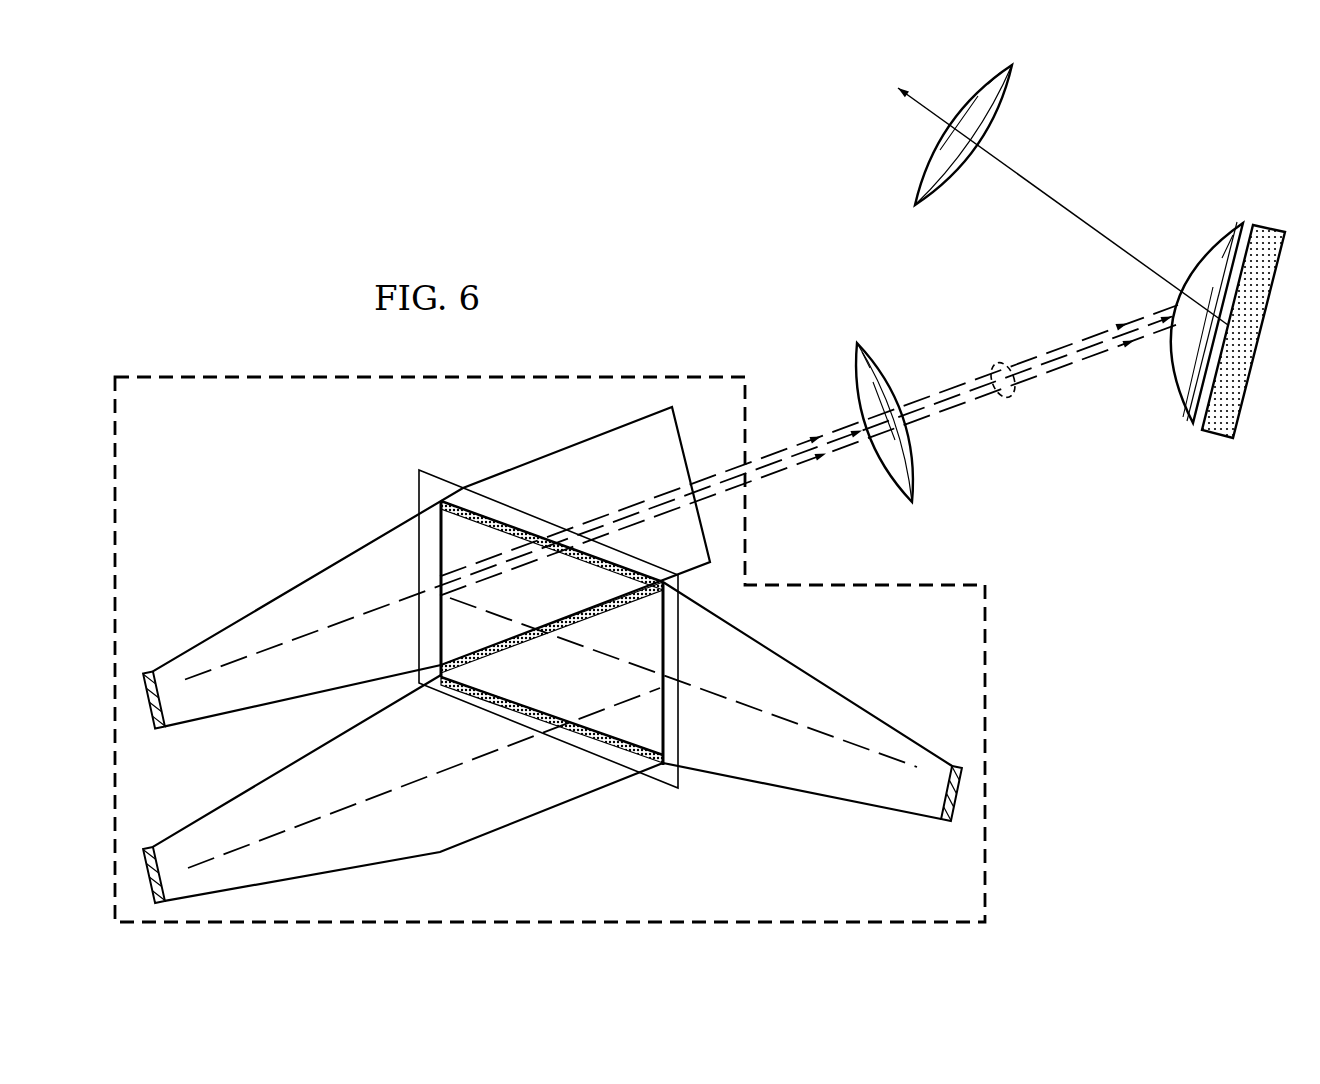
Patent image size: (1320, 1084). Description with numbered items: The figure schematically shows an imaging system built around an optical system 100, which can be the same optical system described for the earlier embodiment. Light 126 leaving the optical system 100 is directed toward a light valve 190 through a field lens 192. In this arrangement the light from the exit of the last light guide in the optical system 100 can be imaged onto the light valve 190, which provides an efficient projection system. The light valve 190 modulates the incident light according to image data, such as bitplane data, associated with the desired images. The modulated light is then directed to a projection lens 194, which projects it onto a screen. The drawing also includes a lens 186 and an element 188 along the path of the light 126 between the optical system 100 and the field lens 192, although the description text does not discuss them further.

The optical system 100 is at (252, 485).
The light 126 is at (853, 461).
The lens 186 is at (852, 341).
The aperture stop 188 is at (995, 363).
The light valve 190 is at (1248, 380).
The field lens 192 is at (1201, 252).
The projection lens 194 is at (908, 205).